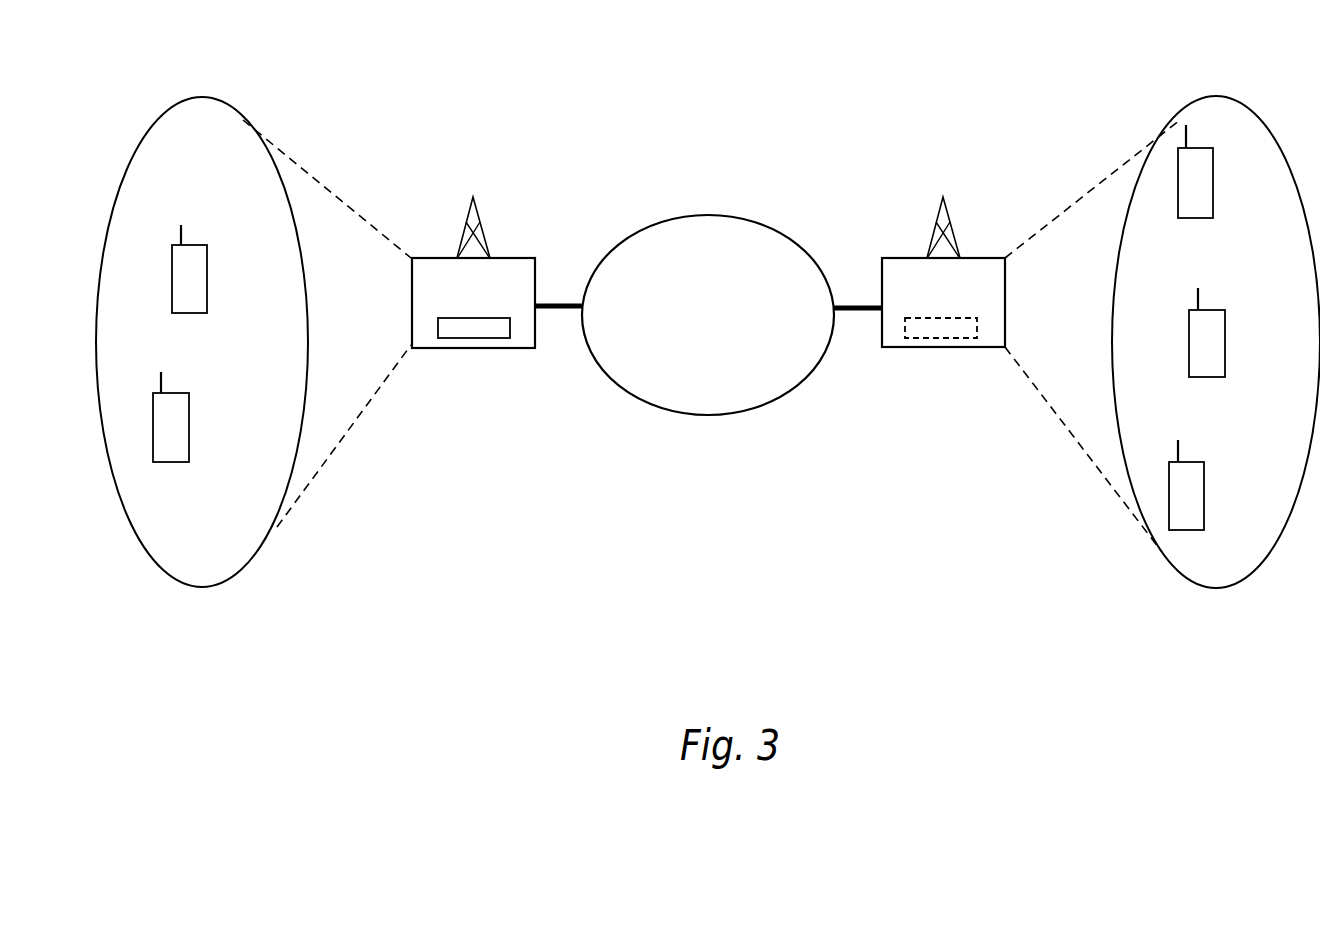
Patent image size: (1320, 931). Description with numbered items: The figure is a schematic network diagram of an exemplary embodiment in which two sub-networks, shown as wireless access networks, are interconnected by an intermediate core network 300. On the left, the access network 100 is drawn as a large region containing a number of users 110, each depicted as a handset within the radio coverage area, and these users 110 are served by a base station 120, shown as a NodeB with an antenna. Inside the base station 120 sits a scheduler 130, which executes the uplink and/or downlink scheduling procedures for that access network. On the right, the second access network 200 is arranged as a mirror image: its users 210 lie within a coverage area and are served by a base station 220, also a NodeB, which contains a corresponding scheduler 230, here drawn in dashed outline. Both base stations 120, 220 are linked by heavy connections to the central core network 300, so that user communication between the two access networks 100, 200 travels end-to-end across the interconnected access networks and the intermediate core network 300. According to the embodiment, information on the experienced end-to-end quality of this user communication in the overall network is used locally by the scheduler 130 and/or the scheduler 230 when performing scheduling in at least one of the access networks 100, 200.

The access network 100 is at (479, 94).
The users 110 is at (208, 276).
The base station 120 is at (518, 258).
The scheduler 130 is at (478, 338).
The access network 200 is at (988, 95).
The users 210 is at (1214, 181).
The base station 220 is at (893, 258).
The scheduler 230 is at (938, 338).
The core network 300 is at (714, 415).